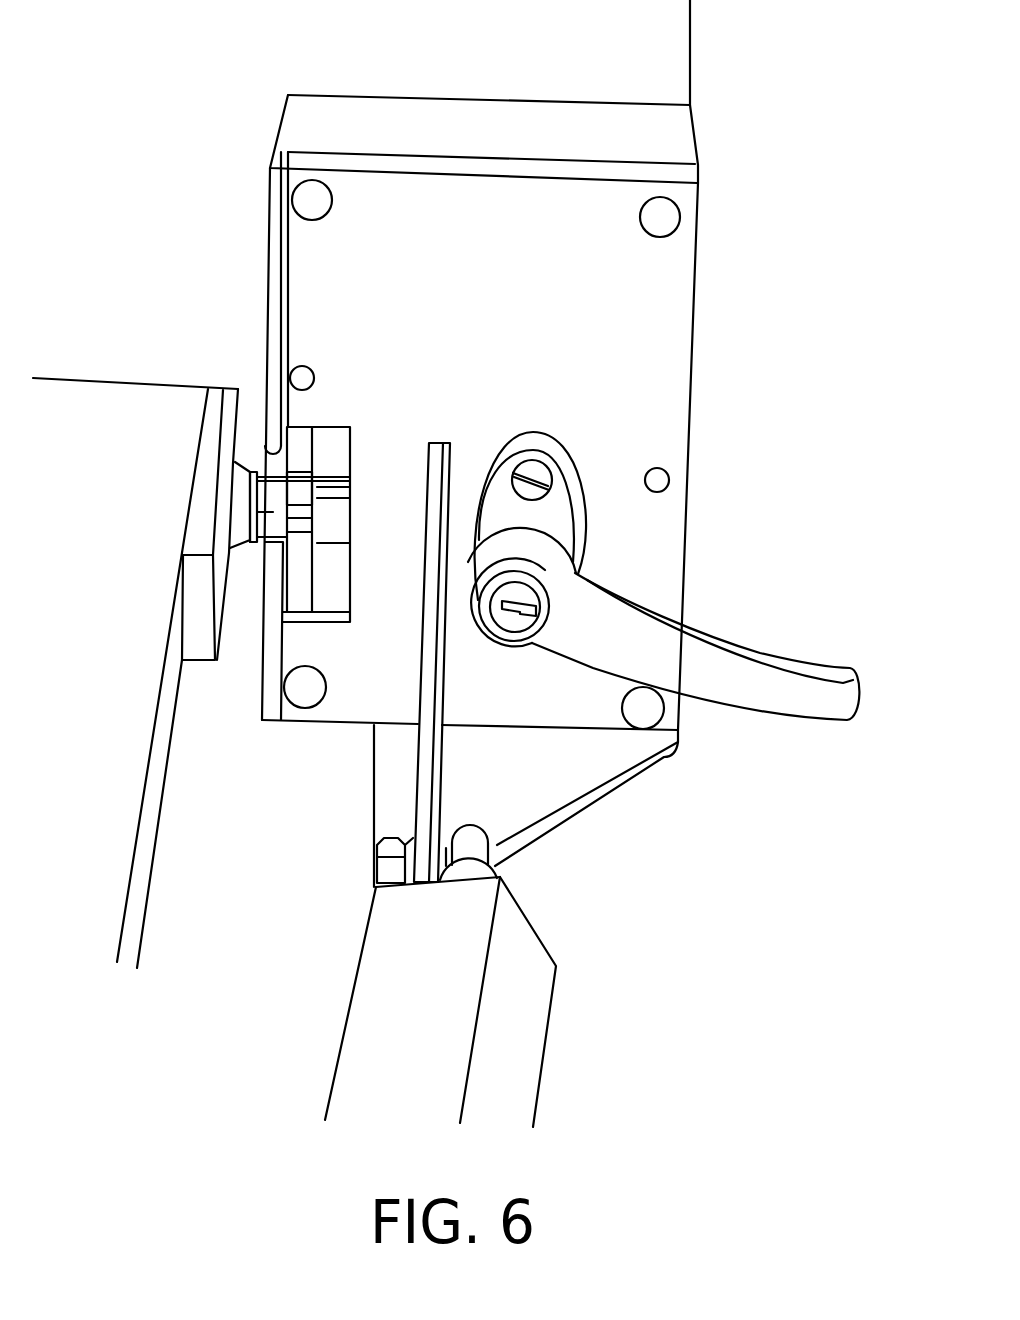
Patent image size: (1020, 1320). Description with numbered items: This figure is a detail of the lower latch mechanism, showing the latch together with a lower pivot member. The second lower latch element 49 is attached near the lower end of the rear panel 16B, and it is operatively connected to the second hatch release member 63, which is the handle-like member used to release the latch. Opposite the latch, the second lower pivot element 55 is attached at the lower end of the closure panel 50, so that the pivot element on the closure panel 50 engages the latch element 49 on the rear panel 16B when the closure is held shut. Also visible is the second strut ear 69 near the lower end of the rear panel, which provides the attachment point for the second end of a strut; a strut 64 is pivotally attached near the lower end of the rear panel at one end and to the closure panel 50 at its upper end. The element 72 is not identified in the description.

The second rear panel 16B is at (647, 35).
The second lower latch element 49 is at (673, 387).
The closure panel 50 is at (108, 833).
The second lower pivot element 55 is at (273, 513).
The second hatch release member 63 is at (807, 705).
The first strut 64 is at (522, 982).
The second strut ear 69 is at (440, 677).
The pivot plate 72 is at (403, 722).